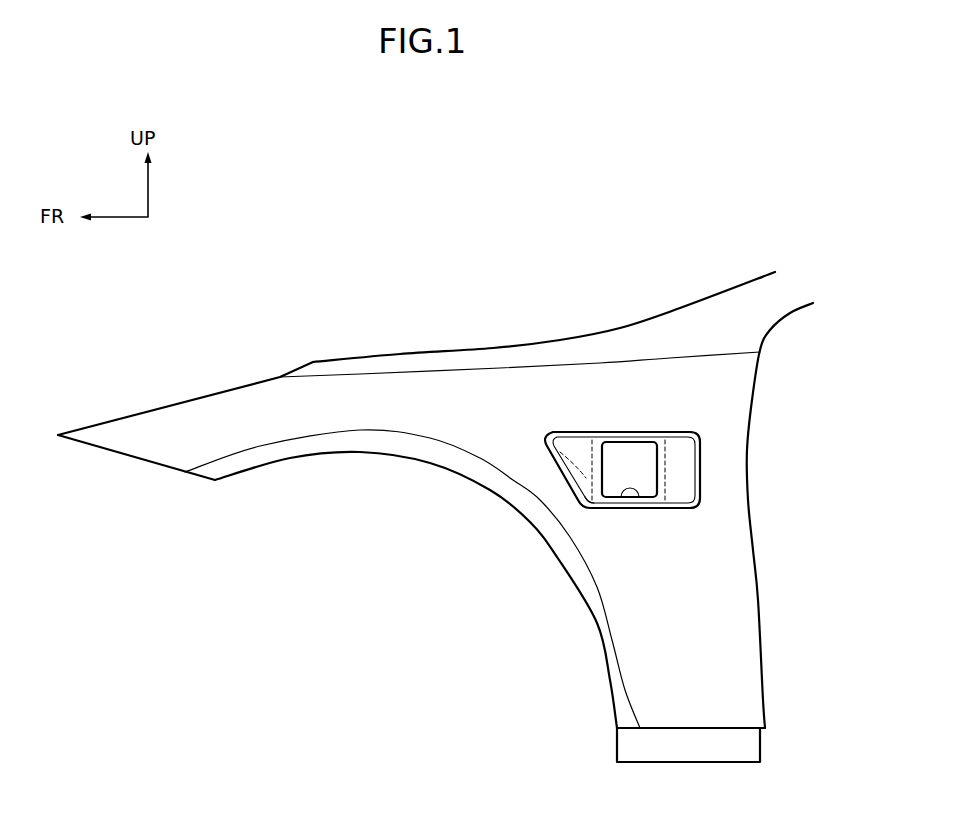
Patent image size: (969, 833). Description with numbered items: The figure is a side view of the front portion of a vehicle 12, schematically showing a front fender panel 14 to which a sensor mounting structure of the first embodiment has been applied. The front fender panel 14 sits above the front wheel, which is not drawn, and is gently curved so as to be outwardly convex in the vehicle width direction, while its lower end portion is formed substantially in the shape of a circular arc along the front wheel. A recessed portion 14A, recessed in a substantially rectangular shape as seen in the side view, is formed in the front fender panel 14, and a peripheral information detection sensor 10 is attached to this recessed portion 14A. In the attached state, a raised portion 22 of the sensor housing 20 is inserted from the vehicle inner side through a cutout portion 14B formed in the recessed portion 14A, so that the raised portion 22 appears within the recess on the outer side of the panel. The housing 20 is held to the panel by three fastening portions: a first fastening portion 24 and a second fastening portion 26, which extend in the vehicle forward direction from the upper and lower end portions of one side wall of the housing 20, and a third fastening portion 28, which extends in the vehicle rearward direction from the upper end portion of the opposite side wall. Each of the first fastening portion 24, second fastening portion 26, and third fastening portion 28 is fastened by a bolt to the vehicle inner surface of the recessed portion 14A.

The peripheral information detection sensor 10 is at (709, 431).
The vehicle 12 is at (358, 262).
The front fender panel 14 is at (493, 343).
The recessed portion 14A is at (596, 452).
The cutout portion 14B is at (625, 508).
The housing 20 is at (745, 487).
The raised portion 22 is at (643, 468).
The first fastening portion 24 is at (560, 439).
The second fastening portion 26 is at (583, 512).
The third fastening portion 28 is at (703, 441).